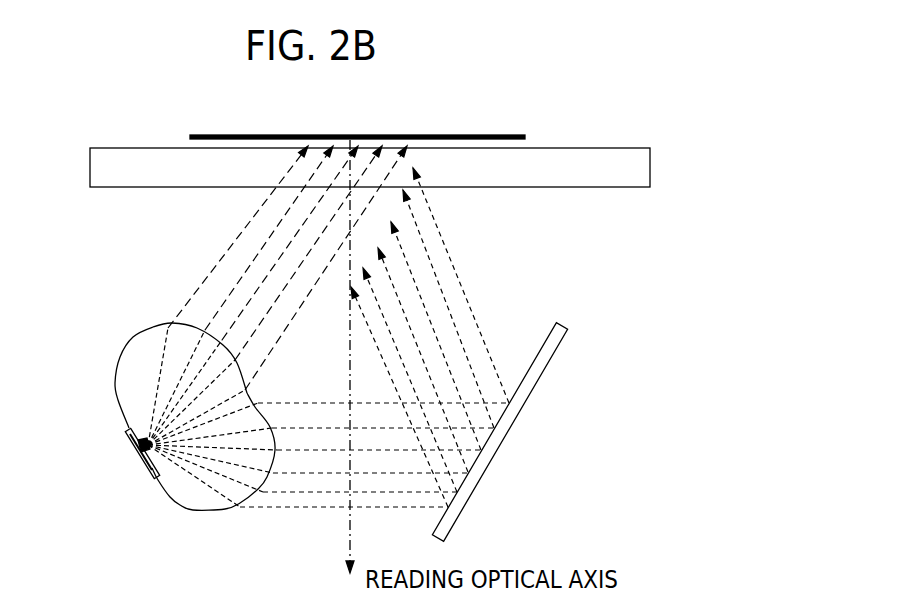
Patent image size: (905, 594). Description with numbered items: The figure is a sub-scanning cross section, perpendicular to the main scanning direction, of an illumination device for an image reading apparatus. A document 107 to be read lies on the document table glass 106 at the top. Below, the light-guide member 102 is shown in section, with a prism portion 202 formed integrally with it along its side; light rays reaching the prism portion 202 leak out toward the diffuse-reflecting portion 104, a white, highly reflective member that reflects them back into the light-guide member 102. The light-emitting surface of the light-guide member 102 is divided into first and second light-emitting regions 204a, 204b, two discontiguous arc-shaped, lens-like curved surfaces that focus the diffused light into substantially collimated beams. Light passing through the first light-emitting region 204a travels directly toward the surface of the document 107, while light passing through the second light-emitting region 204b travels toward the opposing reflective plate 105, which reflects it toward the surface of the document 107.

The light-guide member 102 is at (208, 418).
The diffuse-reflecting portion 104 is at (140, 460).
The opposing reflective plate 105 is at (477, 468).
The document table glass 106 is at (625, 165).
The document 107 is at (447, 135).
The prism portion 202 is at (128, 432).
The first light-emitting region 204a is at (165, 323).
The second light-emitting region 204b is at (270, 487).